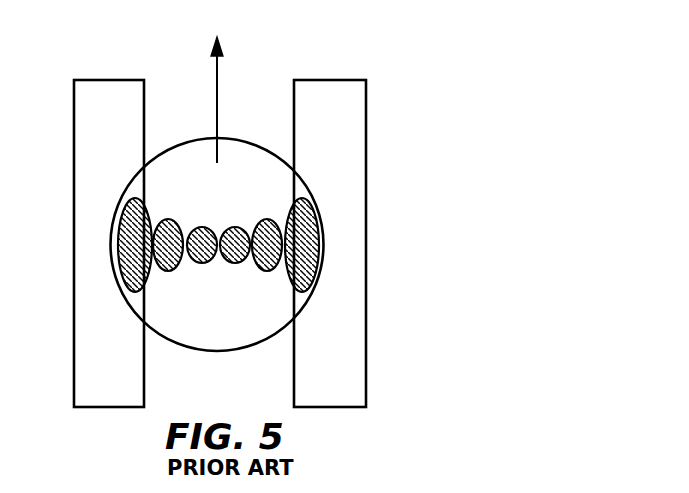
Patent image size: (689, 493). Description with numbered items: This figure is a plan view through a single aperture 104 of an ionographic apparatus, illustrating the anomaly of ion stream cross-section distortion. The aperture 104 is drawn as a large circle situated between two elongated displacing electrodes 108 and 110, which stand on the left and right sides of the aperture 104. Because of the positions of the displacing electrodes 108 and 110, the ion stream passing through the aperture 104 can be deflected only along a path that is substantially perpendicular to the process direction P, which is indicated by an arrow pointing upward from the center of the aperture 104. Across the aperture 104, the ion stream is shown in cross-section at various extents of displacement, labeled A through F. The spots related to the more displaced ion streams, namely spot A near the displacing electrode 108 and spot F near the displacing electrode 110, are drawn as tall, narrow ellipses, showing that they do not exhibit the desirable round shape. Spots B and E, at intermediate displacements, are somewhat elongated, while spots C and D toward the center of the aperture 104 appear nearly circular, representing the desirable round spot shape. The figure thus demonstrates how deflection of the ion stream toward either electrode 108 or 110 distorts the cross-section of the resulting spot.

The aperture 104 is at (244, 138).
The displacing electrode 108 is at (107, 80).
The displacing electrode 110 is at (327, 80).
The process direction P is at (218, 86).
The spot A is at (125, 212).
The spot B is at (168, 219).
The spot C is at (202, 227).
The spot D is at (235, 227).
The spot E is at (267, 219).
The spot F is at (311, 212).